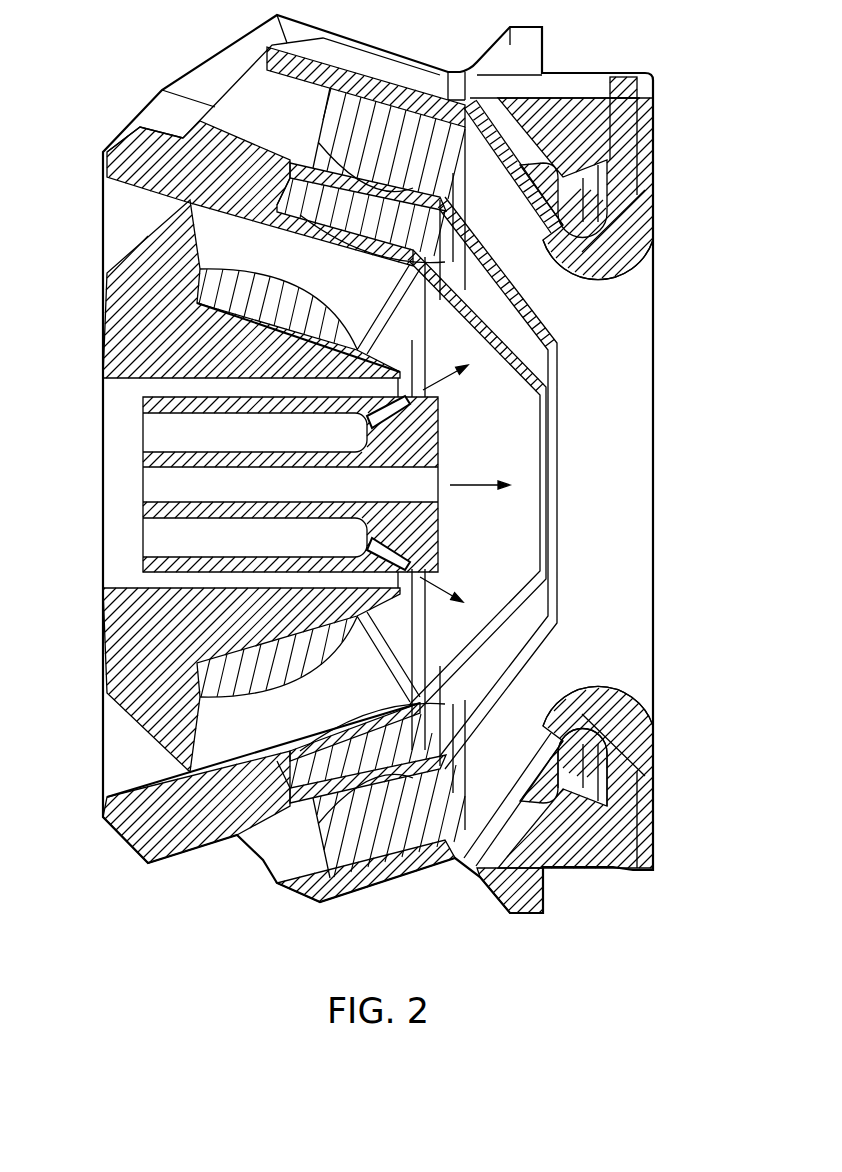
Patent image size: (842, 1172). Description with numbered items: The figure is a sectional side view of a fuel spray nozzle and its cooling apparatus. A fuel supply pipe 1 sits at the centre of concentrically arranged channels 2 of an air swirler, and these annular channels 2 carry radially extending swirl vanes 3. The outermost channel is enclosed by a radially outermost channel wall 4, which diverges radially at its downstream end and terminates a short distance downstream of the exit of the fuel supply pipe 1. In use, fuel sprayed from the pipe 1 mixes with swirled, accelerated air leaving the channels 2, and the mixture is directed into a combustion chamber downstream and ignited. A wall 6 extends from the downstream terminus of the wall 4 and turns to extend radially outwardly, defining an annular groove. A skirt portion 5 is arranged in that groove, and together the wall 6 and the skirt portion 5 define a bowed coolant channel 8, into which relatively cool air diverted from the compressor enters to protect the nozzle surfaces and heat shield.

The fuel supply pipe 1 is at (432, 447).
The channels 2 is at (207, 152).
The swirl vanes 3 is at (320, 757).
The radially outermost channel wall 4 is at (367, 890).
The skirt portion 5 is at (612, 122).
The wall 6 is at (640, 250).
The bowed coolant channel 8 is at (575, 765).